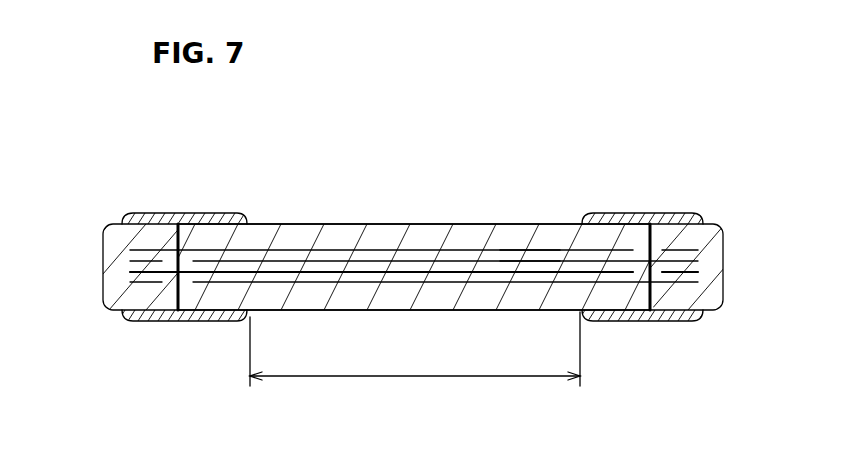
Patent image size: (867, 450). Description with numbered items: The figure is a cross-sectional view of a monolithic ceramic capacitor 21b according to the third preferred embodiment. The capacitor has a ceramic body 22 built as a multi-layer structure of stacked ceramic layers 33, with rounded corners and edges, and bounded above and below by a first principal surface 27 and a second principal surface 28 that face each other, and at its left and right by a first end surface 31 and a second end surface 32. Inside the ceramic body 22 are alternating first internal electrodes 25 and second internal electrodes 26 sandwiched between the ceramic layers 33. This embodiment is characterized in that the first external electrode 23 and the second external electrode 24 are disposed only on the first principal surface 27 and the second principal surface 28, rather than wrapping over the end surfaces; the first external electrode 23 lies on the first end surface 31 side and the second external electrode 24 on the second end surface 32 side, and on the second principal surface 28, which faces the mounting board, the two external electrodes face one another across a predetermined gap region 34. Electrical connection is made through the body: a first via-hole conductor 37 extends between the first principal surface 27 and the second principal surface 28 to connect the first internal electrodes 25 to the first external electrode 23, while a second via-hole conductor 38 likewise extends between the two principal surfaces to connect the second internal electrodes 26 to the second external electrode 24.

The monolithic ceramic capacitor 21b is at (203, 112).
The ceramic body 22 is at (455, 224).
The first external electrode 23 is at (144, 216).
The second external electrode 24 is at (668, 216).
The first internal electrodes 25 is at (312, 272).
The second internal electrodes 26 is at (500, 262).
The first principal surface 27 is at (363, 224).
The second principal surface 28 is at (398, 310).
The first end surface 31 is at (103, 261).
The second end surface 32 is at (725, 257).
The ceramic layers 33 is at (552, 261).
The gap region 34 is at (428, 378).
The first via-hole conductor 37 is at (178, 293).
The second via-hole conductor 38 is at (650, 294).